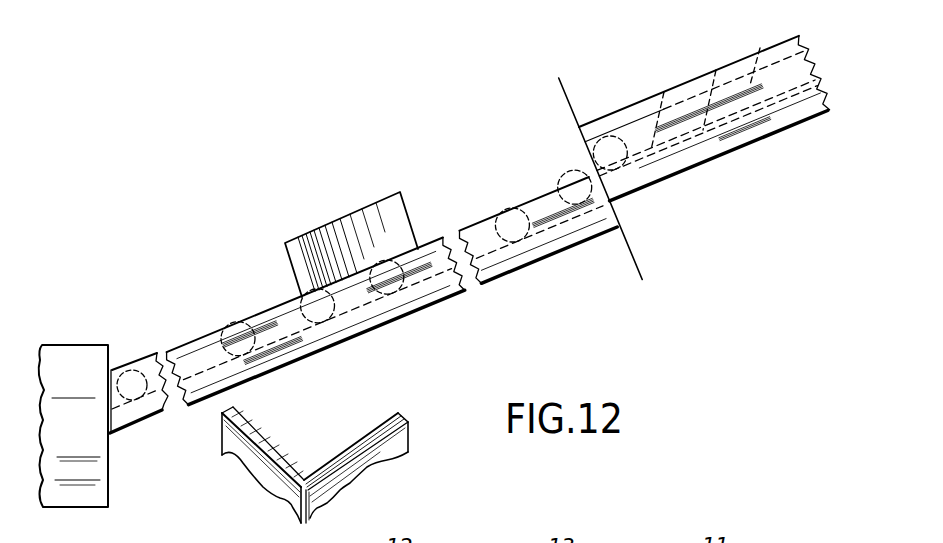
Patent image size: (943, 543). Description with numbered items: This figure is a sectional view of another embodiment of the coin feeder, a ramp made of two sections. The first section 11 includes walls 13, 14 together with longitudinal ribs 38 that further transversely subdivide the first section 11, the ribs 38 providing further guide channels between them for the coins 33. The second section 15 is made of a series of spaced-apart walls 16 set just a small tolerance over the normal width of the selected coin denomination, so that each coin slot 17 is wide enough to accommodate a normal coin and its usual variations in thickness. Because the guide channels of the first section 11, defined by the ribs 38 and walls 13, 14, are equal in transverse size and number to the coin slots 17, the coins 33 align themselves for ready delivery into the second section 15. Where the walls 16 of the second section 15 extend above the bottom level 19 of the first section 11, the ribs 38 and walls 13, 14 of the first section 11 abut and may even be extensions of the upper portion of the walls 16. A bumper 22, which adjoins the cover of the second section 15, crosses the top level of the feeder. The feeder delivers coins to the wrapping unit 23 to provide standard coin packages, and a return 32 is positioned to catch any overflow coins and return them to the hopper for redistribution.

The first section 11 is at (730, 163).
The wall 13 is at (552, 106).
The wall 14 is at (760, 48).
The second section 15 is at (412, 323).
The walls 16 is at (540, 202).
The coin slot 17 is at (487, 224).
The bottom level 19 is at (664, 92).
The bumper 22 is at (284, 244).
The wrapping unit 23 is at (70, 352).
The return 32 is at (262, 480).
The coins 33 is at (244, 306).
The longitudinal ribs 38 is at (724, 57).